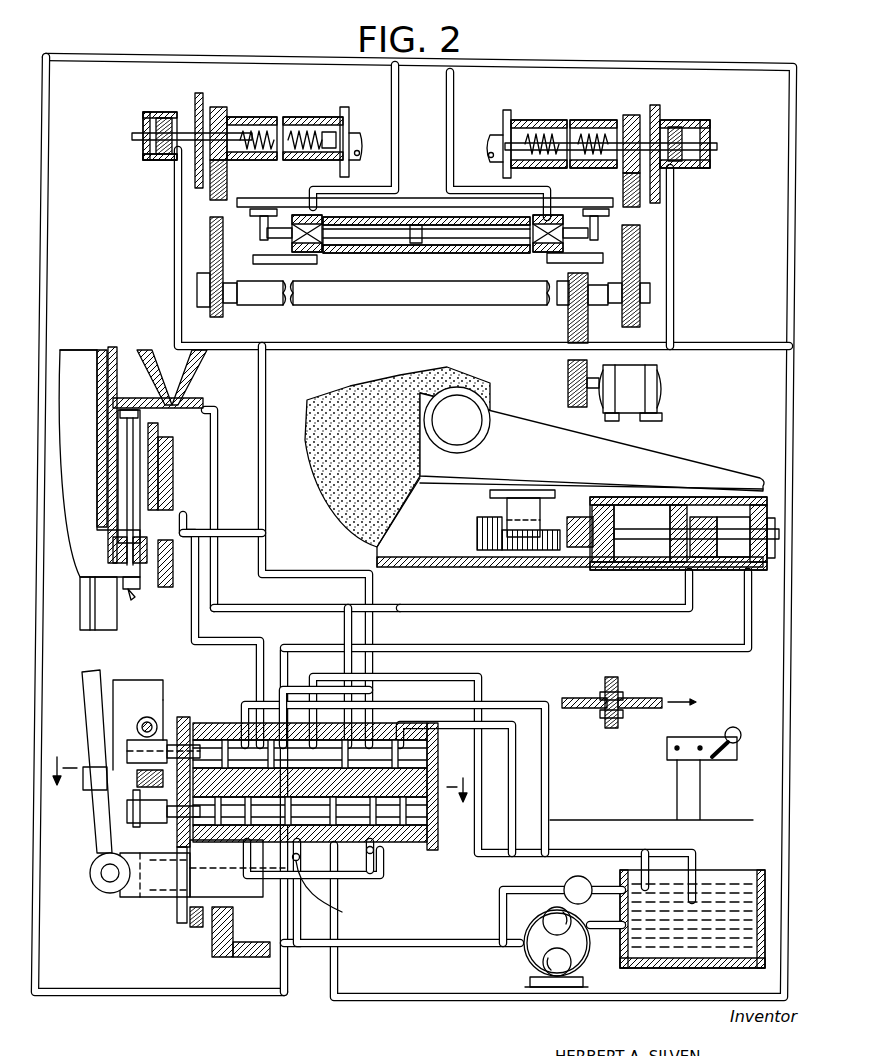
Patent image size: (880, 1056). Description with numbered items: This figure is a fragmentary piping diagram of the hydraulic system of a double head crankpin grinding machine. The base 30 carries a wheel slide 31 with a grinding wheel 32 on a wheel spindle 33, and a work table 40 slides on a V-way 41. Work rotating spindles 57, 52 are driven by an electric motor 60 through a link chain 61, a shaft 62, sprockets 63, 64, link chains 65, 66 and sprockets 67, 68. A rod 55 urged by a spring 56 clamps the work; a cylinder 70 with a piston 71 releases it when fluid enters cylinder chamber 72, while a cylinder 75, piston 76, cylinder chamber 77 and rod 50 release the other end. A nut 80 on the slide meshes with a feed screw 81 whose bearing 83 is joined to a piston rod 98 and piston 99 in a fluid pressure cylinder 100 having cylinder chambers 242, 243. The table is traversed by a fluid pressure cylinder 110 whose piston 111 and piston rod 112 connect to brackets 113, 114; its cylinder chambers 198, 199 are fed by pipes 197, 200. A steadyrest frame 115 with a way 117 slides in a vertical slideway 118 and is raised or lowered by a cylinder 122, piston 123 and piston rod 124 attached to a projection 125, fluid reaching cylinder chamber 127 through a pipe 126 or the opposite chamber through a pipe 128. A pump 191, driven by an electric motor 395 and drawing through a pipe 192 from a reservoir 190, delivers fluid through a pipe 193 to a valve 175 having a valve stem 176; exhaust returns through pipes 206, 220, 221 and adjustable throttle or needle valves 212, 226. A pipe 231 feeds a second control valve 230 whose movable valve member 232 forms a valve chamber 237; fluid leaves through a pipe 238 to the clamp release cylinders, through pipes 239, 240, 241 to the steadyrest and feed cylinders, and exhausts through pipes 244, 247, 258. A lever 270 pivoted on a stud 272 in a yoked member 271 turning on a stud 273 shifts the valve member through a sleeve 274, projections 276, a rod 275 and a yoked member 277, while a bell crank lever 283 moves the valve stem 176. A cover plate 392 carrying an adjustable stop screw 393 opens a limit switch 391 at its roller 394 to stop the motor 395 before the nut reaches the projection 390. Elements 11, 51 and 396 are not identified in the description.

The section line 11 is at (258, 780).
The base 30 is at (308, 254).
The wheel slide 31 is at (700, 460).
The grinding wheel 32 is at (310, 398).
The wheel spindle 33 is at (478, 420).
The work table 40 is at (417, 197).
The V-way 41 is at (192, 375).
The rod 50 is at (490, 137).
The clutch spring housing 51 is at (590, 120).
The work rotating spindle 52 is at (540, 120).
The rod 55 is at (350, 133).
The spring 56 is at (312, 117).
The work rotating spindle 57 is at (262, 117).
The electric motor 60 is at (664, 384).
The link chain 61 is at (568, 378).
The shaft 62 is at (498, 298).
The sprocket 63 is at (196, 278).
The sprocket 64 is at (641, 290).
The link chain 65 is at (213, 250).
The link chain 66 is at (640, 245).
The sprocket 67 is at (199, 93).
The sprocket 68 is at (654, 105).
The cylinder 70 is at (144, 116).
The piston 71 is at (158, 168).
The cylinder chamber 72 is at (164, 118).
The cylinder 75 is at (706, 120).
The piston 76 is at (686, 120).
The cylinder chamber 77 is at (683, 165).
The nut 80 is at (500, 503).
The feed screw 81 is at (476, 524).
The bearing 83 is at (603, 570).
The piston rod 98 is at (648, 560).
The piston 99 is at (742, 572).
The fluid pressure cylinder 100 is at (742, 580).
The fluid pressure cylinder 110 is at (372, 250).
The piston 111 is at (417, 245).
The piston rod 112 is at (446, 247).
The bracket 113 is at (262, 232).
The bracket 114 is at (594, 240).
The frame 115 is at (70, 348).
The way 117 is at (102, 348).
The vertical slideway 118 is at (85, 604).
The cylinder 122 is at (158, 452).
The piston 123 is at (142, 425).
The piston rod 124 is at (160, 478).
The projection 125 is at (140, 588).
The pipe 126 is at (186, 518).
The cylinder chamber 127 is at (108, 470).
The pipe 128 is at (212, 405).
The valve 175 is at (428, 836).
The valve stem 176 is at (172, 820).
The reservoir 190 is at (665, 968).
The pump 191 is at (527, 950).
The pipe 192 is at (590, 955).
The pipe 193 is at (289, 932).
The pipe 197 is at (345, 949).
The cylinder chamber 198 is at (492, 250).
The cylinder chamber 199 is at (392, 275).
The pipe 200 is at (396, 112).
The pipe 206 is at (243, 842).
The adjustable throttle or needle valve 212 is at (334, 887).
The pipe 220 is at (376, 838).
The pipe 221 is at (344, 877).
The adjustable throttle or needle valve 226 is at (374, 853).
The second control valve 230 is at (441, 745).
The pipe 231 is at (305, 673).
The movable valve member 232 is at (182, 716).
The valve chamber 237 is at (296, 725).
The pipe 238 is at (176, 300).
The pipe 239 is at (343, 627).
The pipe 240 is at (280, 602).
The pipe 241 is at (487, 605).
The cylinder chamber 242 is at (680, 570).
The cylinder chamber 243 is at (752, 570).
The pipe 244 is at (715, 645).
The pipe 247 is at (242, 702).
The pipe 258 is at (516, 731).
The manually operable lever 270 is at (100, 668).
The yoked member 271 is at (137, 897).
The stud 272 is at (100, 880).
The stud 273 is at (238, 895).
The sleeve 274 is at (128, 745).
The rod 275 is at (137, 680).
The projections 276 is at (138, 722).
The yoked member 277 is at (162, 698).
The bell crank lever 283 is at (135, 785).
The projection 390 is at (585, 505).
The limit switch 391 is at (730, 762).
The cover plate 392 is at (575, 697).
The adjustable stop screw 393 is at (604, 725).
The roller 394 is at (736, 727).
The electric motor 395 is at (532, 987).
The stop bar 396 is at (636, 698).